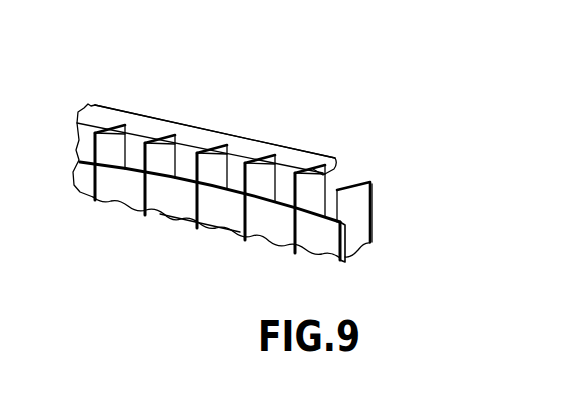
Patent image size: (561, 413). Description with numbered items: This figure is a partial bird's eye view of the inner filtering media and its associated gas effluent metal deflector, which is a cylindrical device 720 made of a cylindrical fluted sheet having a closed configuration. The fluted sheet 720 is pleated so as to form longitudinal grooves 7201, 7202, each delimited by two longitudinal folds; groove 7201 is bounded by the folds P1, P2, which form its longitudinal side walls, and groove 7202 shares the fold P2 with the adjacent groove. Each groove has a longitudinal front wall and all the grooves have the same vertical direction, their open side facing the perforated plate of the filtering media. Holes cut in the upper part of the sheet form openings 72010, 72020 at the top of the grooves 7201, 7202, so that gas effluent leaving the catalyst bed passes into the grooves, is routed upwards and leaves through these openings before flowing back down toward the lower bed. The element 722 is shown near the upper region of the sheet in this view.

The cylindrical device 720 is at (209, 185).
The longitudinal groove 7201 is at (132, 183).
The longitudinal groove 7202 is at (180, 203).
The opening 72010 is at (128, 162).
The opening 72020 is at (178, 168).
The top surface 722 is at (312, 155).
The longitudinal fold P1 is at (143, 217).
The longitudinal fold P2 is at (202, 228).